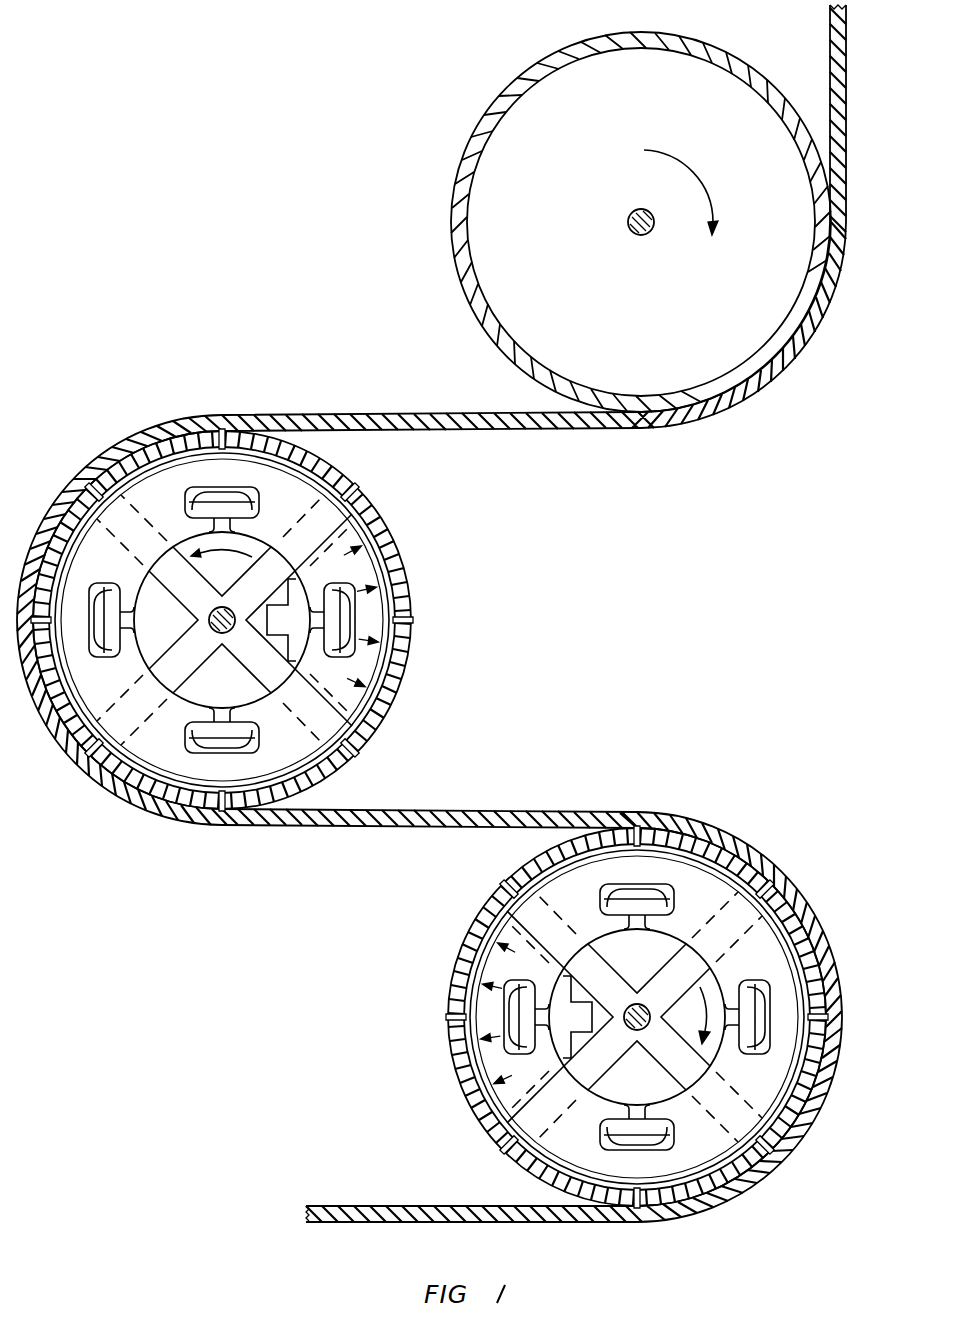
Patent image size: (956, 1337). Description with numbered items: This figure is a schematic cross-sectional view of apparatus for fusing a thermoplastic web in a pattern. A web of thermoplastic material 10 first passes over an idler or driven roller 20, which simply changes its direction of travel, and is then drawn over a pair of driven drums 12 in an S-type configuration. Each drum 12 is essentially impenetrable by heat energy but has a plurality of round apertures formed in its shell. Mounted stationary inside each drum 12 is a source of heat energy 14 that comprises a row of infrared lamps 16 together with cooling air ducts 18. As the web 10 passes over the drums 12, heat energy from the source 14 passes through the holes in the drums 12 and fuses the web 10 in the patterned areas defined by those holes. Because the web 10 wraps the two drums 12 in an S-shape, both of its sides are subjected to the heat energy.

The web of thermoplastic material 10 is at (847, 52).
The driven drum 12 is at (413, 624).
The stationary source of heat energy 14 is at (222, 708).
The infrared lamp 16 is at (184, 501).
The cooling air duct 18 is at (288, 637).
The idler or driven roller 20 is at (451, 222).